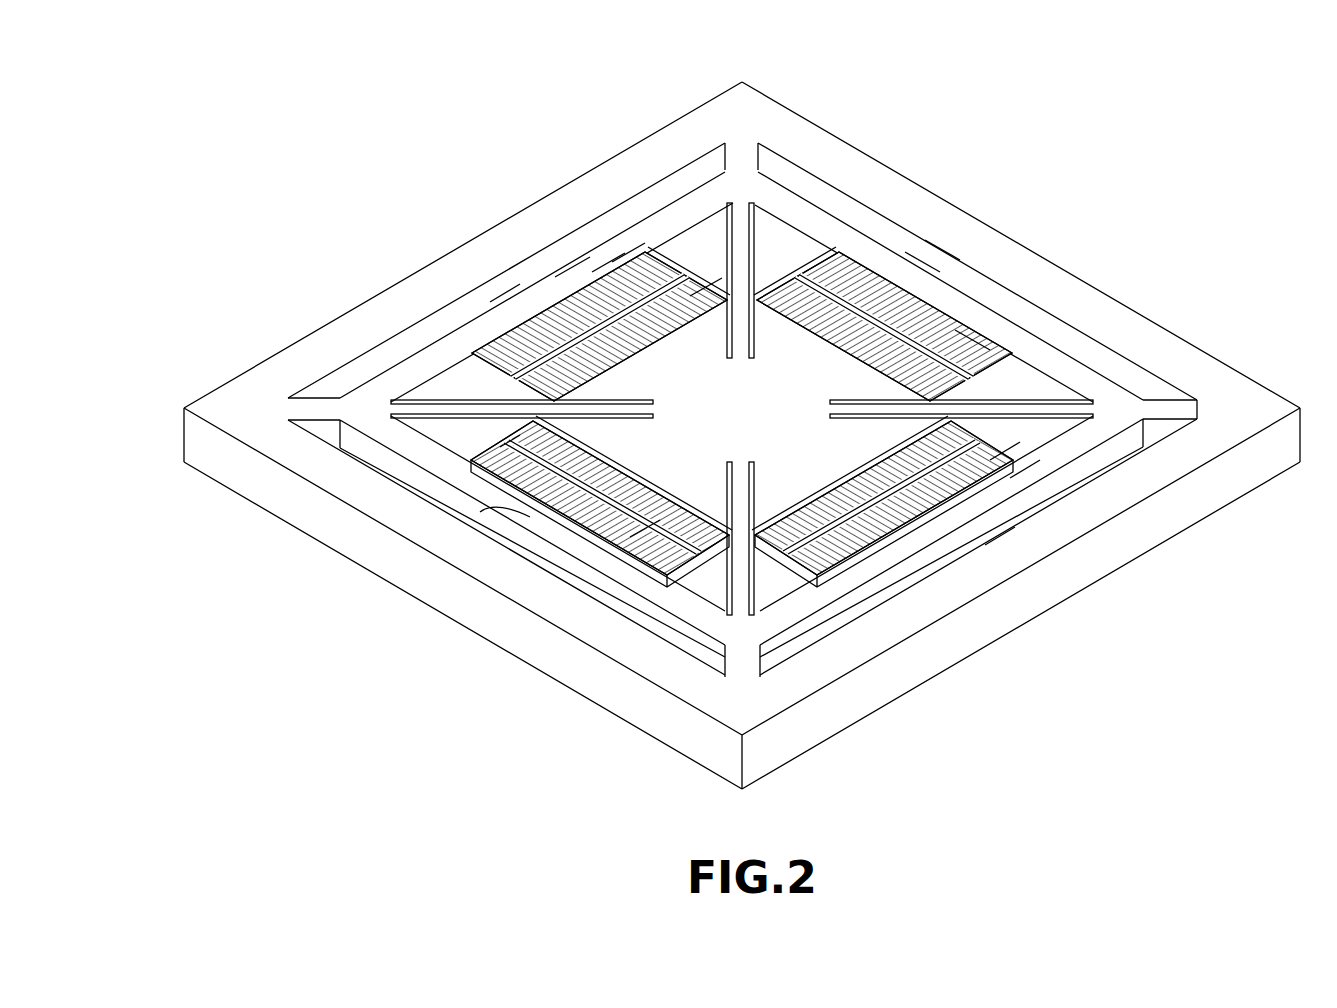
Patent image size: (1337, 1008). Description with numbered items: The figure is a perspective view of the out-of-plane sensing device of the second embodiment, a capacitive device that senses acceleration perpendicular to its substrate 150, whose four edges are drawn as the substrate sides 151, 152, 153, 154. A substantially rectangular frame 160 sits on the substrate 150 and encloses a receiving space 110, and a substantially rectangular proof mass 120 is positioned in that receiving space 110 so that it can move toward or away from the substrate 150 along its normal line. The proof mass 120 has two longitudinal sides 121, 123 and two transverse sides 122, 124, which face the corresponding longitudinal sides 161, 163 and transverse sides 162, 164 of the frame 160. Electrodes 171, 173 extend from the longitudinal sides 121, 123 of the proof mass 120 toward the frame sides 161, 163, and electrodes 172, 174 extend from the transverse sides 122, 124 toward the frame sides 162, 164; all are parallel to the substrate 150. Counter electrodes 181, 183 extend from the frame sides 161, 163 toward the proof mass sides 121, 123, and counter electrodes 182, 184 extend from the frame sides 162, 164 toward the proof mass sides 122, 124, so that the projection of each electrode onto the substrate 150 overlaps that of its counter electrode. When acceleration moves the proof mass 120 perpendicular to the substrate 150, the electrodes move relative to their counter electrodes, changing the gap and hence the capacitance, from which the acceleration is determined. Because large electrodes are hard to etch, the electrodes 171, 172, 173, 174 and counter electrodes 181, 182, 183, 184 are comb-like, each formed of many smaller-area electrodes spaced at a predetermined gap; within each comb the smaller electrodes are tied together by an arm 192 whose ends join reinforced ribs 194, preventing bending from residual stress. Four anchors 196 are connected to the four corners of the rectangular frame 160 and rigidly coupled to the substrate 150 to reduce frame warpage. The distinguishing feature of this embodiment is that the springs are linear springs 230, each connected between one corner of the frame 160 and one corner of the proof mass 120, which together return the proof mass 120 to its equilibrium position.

The receiving space 110 is at (712, 240).
The proof mass 120 is at (528, 213).
The longitudinal side of the proof mass 121 is at (494, 576).
The transverse side of the proof mass 122 is at (700, 277).
The longitudinal side of the proof mass 123 is at (962, 257).
The transverse side of the proof mass 124 is at (1022, 560).
The substrate 150 is at (742, 439).
The frame side 151 is at (648, 693).
The frame side 152 is at (480, 235).
The frame side 153 is at (1160, 345).
The frame side 154 is at (1003, 600).
The frame 160 is at (572, 267).
The longitudinal side of the frame 161 is at (480, 512).
The transverse side of the frame 162 is at (503, 310).
The longitudinal side of the frame 163 is at (942, 250).
The transverse side of the frame 164 is at (1000, 533).
The electrode 171 is at (517, 430).
The electrode 172 is at (627, 268).
The electrode 173 is at (925, 262).
The electrode 174 is at (1025, 470).
The counter electrode 181 is at (645, 528).
The counter electrode 182 is at (607, 263).
The counter electrode 183 is at (988, 358).
The counter electrode 184 is at (1010, 455).
The arm 192 is at (907, 270).
The reinforced ribs 194 is at (675, 270).
The anchors 196 is at (765, 148).
The linear springs 230 is at (812, 250).